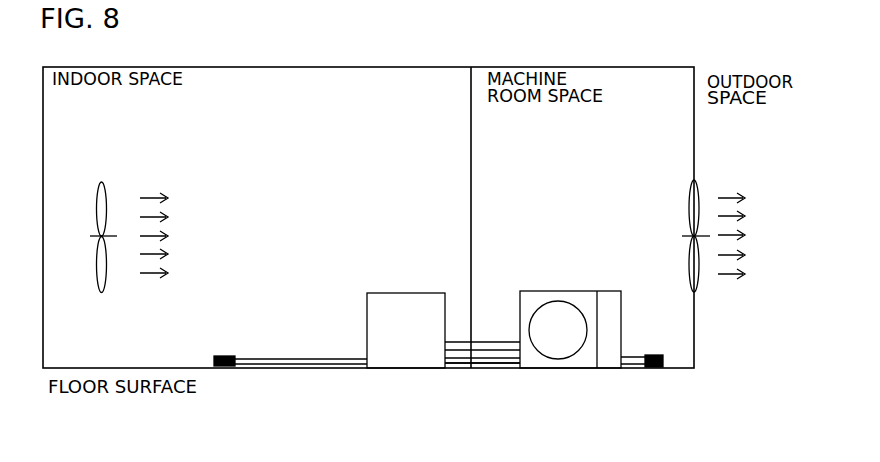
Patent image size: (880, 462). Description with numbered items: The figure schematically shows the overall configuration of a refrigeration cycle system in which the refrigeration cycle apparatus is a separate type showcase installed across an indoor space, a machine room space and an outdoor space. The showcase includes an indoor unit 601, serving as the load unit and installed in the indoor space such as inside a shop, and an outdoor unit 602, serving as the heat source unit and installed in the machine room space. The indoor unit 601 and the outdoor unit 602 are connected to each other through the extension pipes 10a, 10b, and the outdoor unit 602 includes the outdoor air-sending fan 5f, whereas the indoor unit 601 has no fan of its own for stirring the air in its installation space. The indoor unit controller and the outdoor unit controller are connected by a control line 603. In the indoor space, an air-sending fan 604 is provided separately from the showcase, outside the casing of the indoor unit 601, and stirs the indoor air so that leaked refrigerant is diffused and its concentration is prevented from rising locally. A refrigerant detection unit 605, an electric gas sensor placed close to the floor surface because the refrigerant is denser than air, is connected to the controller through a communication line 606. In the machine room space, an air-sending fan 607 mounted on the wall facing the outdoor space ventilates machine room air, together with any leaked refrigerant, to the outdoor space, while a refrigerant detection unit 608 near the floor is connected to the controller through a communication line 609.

The indoor unit 601 is at (418, 293).
The outdoor unit 602 is at (550, 295).
The control line 603 is at (493, 364).
The air-sending fan 604 is at (104, 182).
The refrigerant detection unit 605 is at (235, 355).
The communication line 606 is at (300, 367).
The air-sending fan 607 is at (692, 213).
The refrigerant detection unit 608 is at (645, 368).
The communication line 609 is at (637, 355).
The extension pipe 10a is at (497, 357).
The extension pipe 10b is at (487, 342).
The outdoor air-sending fan 5f is at (557, 360).